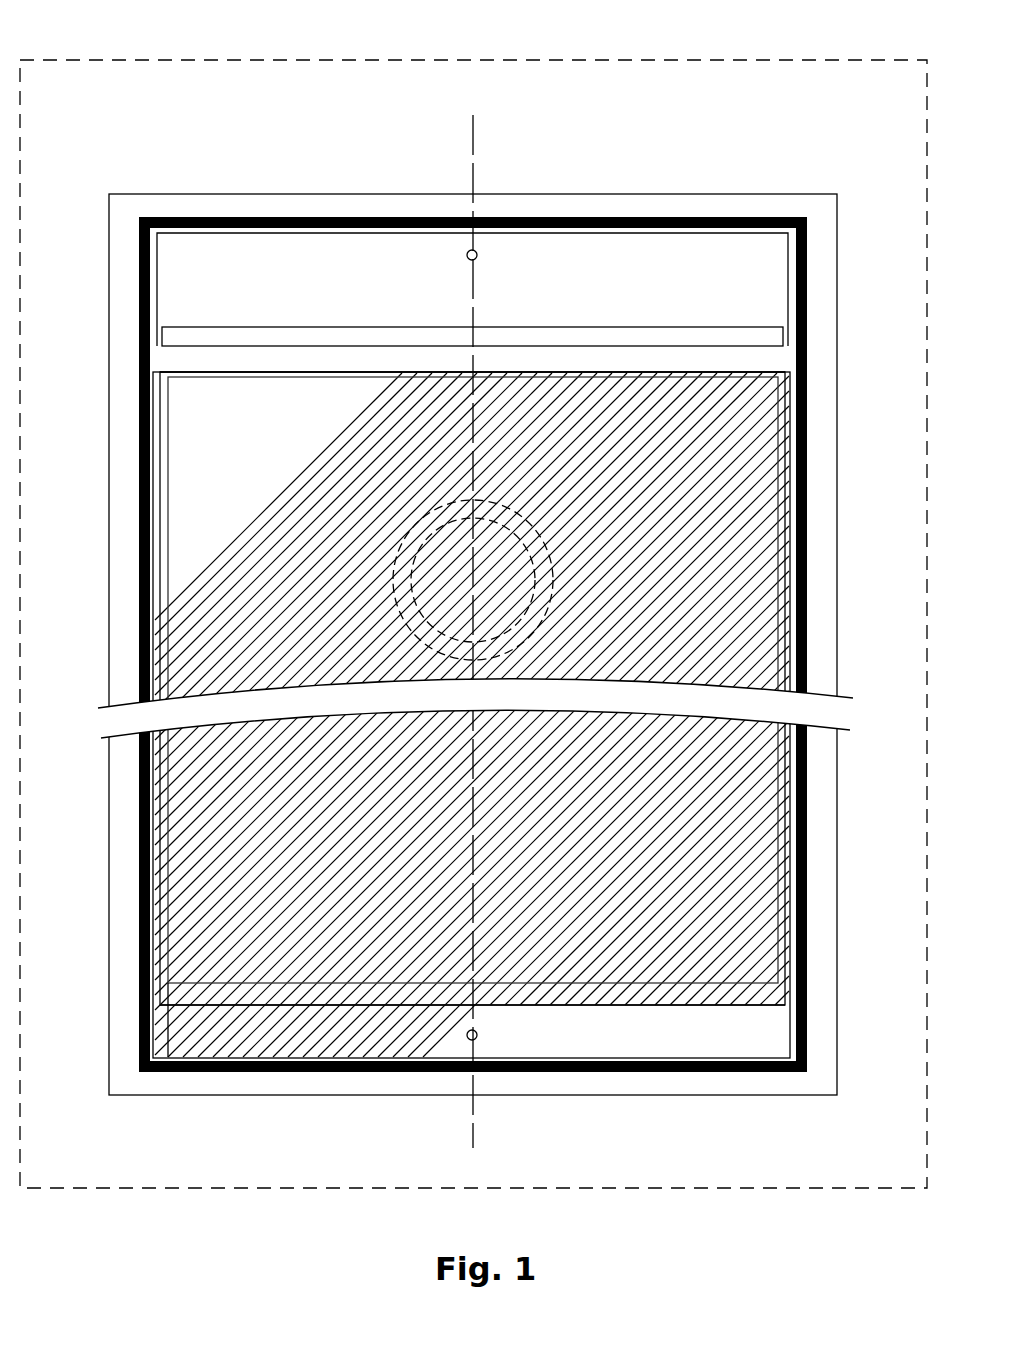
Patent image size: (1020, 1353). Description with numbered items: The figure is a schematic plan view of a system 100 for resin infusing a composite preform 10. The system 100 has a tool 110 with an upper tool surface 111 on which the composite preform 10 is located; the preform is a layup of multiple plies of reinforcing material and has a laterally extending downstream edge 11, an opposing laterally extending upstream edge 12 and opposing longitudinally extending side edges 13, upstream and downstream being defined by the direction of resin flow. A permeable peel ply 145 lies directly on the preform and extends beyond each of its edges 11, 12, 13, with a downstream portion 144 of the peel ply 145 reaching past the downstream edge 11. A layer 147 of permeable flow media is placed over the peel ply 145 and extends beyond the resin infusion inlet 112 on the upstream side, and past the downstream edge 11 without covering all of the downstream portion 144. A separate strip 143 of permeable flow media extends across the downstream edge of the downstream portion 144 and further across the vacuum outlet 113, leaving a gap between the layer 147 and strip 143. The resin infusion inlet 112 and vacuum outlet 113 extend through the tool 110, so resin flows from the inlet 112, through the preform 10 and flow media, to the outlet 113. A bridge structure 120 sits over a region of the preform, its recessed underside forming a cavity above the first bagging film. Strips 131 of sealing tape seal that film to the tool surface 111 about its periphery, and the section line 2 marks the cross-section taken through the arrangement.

The system 100 is at (114, 130).
The tool 110 is at (473, 624).
The upper tool surface 111 is at (127, 412).
The strips of sealing tape 131 is at (334, 217).
The strip of permeable flow media 143 is at (226, 286).
The downstream portion of the peel ply 144 is at (206, 356).
The vacuum outlet 113 is at (477, 250).
The resin infusion inlet 112 is at (478, 1035).
The composite preform 10 is at (780, 539).
The downstream edge 11 is at (768, 376).
The upstream edge 12 is at (730, 984).
The side edges 13 is at (780, 472).
The peel ply 145 is at (167, 597).
The layer of permeable flow media 147 is at (196, 1032).
The bridge structure 120 is at (557, 568).
The section line 2 is at (473, 631).